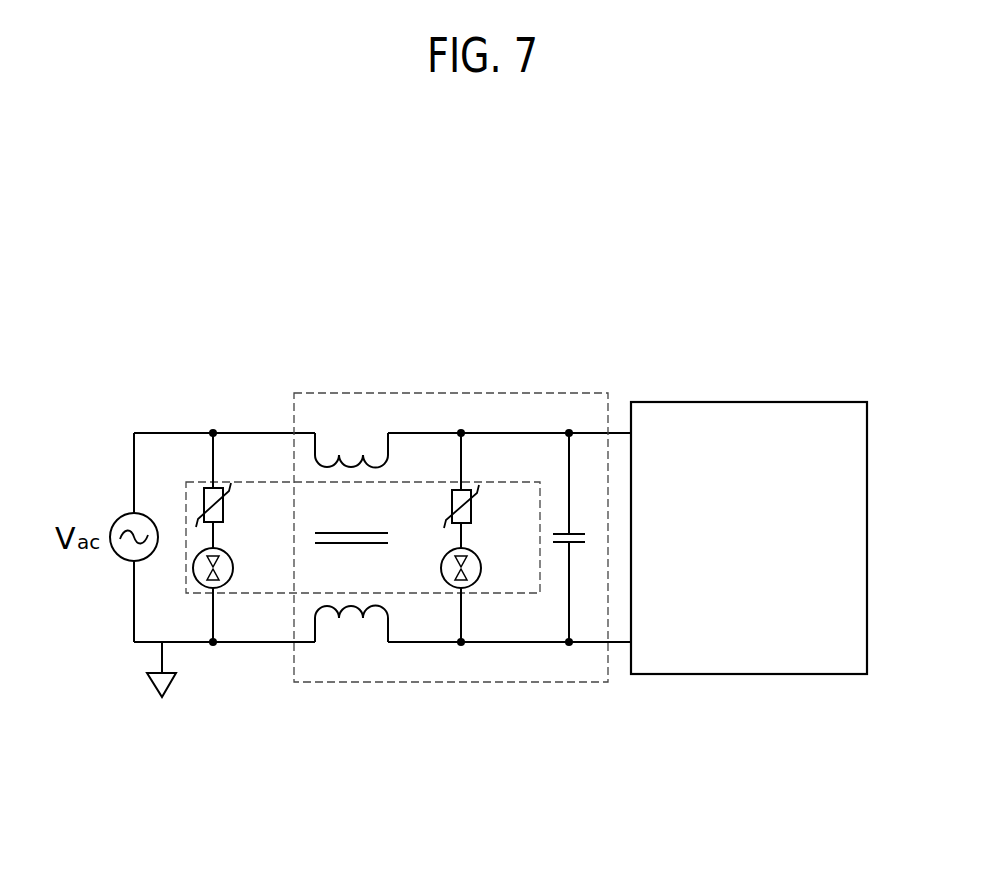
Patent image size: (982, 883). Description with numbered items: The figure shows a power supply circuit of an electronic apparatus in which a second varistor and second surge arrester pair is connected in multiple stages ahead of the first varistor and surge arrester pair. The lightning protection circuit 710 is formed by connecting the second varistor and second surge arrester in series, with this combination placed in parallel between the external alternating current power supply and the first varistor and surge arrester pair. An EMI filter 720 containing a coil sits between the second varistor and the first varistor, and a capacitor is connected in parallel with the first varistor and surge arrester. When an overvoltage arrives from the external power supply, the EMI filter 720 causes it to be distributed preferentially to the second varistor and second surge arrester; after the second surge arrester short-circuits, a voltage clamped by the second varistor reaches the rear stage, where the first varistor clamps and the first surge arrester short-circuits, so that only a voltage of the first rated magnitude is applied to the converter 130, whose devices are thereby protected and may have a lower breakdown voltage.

The lightning protection circuit 710 is at (257, 594).
The EMI filter 720 is at (455, 682).
The converter 130 is at (749, 674).